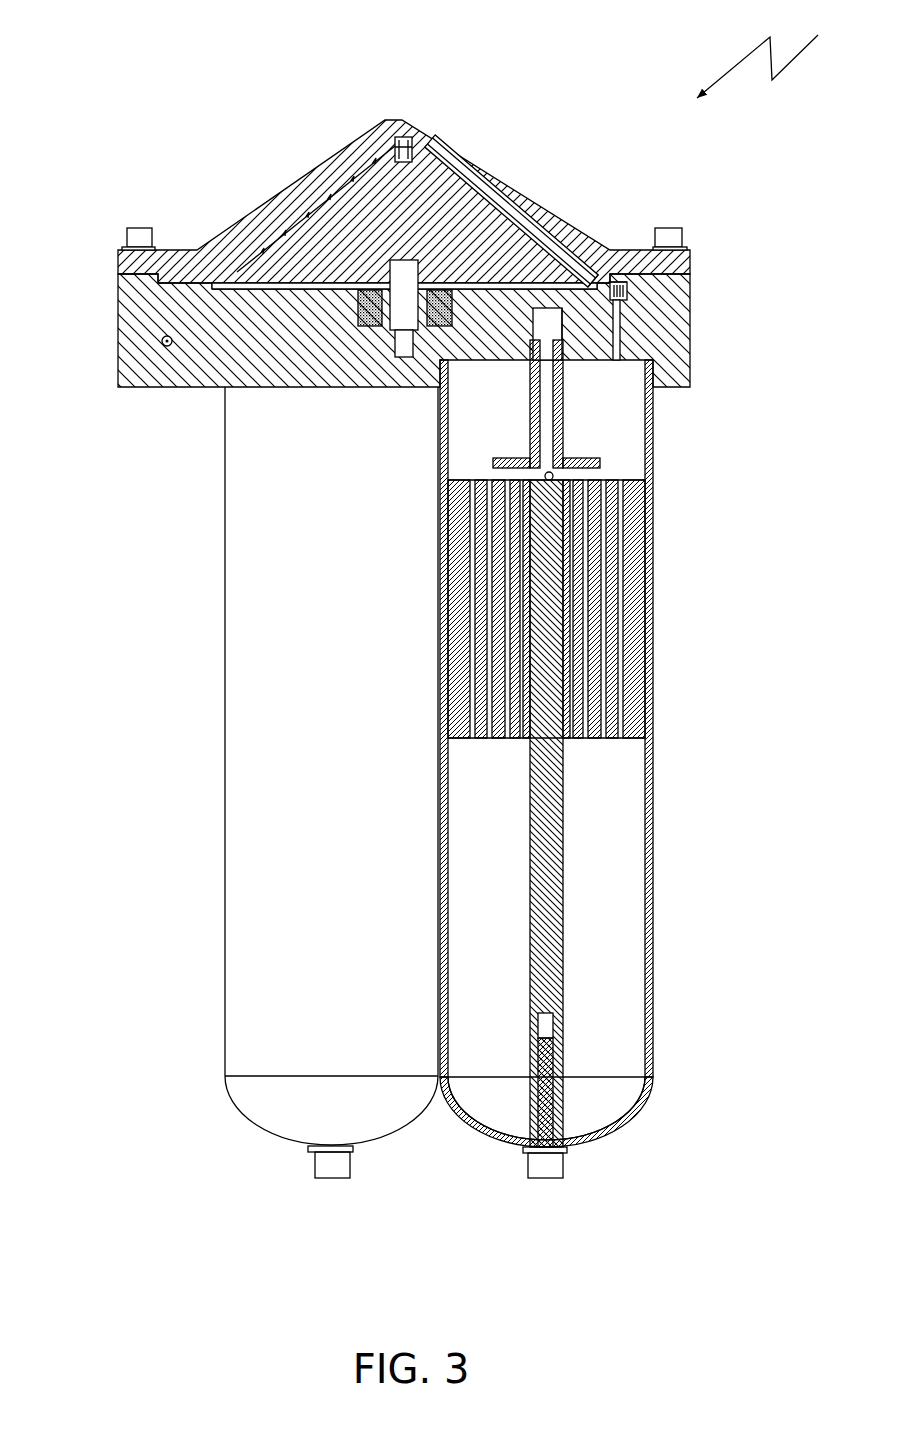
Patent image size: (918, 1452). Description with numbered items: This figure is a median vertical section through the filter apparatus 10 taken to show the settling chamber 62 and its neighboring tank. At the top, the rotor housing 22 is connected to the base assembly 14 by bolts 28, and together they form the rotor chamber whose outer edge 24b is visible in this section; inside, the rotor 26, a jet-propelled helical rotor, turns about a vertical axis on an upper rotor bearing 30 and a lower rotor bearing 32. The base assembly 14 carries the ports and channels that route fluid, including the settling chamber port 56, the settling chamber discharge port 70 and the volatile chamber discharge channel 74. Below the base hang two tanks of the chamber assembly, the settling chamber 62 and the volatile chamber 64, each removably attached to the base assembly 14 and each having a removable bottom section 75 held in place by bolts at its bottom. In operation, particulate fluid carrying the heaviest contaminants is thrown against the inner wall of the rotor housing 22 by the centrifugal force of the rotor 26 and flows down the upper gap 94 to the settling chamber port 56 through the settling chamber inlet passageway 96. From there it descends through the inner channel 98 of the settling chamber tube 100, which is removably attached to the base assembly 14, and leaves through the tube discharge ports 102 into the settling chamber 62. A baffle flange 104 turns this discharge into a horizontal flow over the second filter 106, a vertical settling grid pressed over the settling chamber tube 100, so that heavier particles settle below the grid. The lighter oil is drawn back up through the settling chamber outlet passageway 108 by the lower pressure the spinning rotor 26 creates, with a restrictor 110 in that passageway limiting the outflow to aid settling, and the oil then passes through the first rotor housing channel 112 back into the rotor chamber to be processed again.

The filter apparatus 10 is at (773, 52).
The base assembly 14 is at (117, 300).
The rotor housing 22 is at (297, 176).
The outer edge 24b is at (572, 310).
The rotor 26 is at (465, 185).
The bolts 28 is at (138, 228).
The upper rotor bearing 30 is at (414, 133).
The lower rotor bearing 32 is at (356, 307).
The settling chamber port 56 is at (547, 327).
The settling chamber 62 is at (653, 1005).
The volatile chamber 64 is at (222, 895).
The settling chamber discharge port 70 is at (660, 228).
The volatile chamber discharge channel 74 is at (162, 343).
The removable bottom section 75 is at (633, 1128).
The upper gap 94 is at (547, 232).
The settling chamber inlet passageway 96 is at (640, 297).
The inner channel 98 is at (546, 437).
The settling chamber tube 100 is at (567, 965).
The tube discharge ports 102 is at (560, 480).
The baffle flange 104 is at (605, 468).
The second filter 106 is at (617, 720).
The settling chamber outlet passageway 108 is at (618, 325).
The restrictor 110 is at (630, 286).
The first rotor housing channel 112 is at (602, 272).